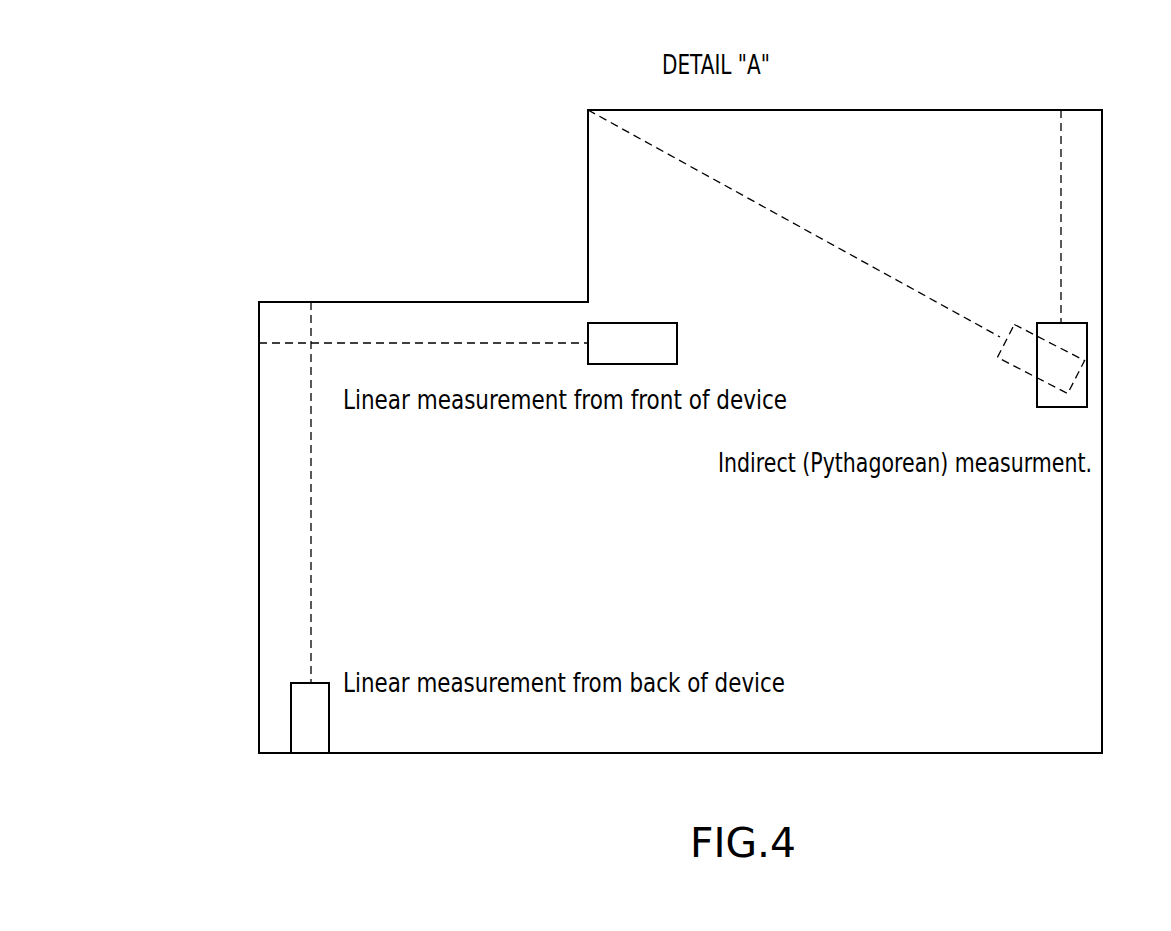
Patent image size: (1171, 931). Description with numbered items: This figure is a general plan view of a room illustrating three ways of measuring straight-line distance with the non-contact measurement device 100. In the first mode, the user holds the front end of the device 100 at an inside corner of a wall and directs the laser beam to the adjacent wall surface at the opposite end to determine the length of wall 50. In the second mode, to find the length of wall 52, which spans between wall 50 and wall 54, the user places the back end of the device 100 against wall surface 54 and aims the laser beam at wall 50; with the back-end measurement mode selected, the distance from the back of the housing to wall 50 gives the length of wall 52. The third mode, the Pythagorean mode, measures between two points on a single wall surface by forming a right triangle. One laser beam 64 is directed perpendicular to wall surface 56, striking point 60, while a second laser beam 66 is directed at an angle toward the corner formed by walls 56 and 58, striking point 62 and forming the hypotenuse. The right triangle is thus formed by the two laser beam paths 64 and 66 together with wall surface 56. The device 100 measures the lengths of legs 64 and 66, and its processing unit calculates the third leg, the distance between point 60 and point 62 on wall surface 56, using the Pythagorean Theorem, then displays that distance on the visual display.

The wall 50 is at (413, 302).
The wall 52 is at (259, 527).
The wall 54 is at (500, 753).
The wall surface 56 is at (898, 110).
The wall 58 is at (588, 180).
The point 60 is at (1061, 110).
The point 62 is at (588, 108).
The laser beam 64 is at (1061, 218).
The laser beam 66 is at (813, 235).
The device 100 is at (642, 321).